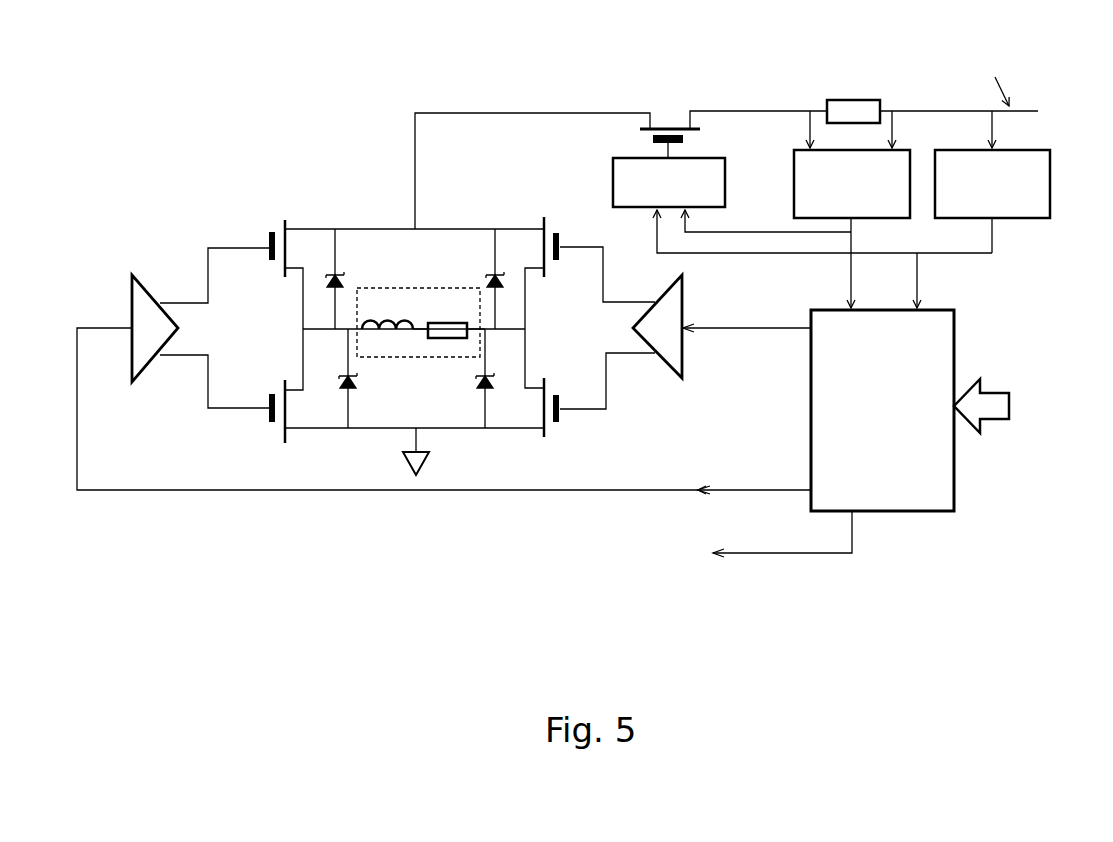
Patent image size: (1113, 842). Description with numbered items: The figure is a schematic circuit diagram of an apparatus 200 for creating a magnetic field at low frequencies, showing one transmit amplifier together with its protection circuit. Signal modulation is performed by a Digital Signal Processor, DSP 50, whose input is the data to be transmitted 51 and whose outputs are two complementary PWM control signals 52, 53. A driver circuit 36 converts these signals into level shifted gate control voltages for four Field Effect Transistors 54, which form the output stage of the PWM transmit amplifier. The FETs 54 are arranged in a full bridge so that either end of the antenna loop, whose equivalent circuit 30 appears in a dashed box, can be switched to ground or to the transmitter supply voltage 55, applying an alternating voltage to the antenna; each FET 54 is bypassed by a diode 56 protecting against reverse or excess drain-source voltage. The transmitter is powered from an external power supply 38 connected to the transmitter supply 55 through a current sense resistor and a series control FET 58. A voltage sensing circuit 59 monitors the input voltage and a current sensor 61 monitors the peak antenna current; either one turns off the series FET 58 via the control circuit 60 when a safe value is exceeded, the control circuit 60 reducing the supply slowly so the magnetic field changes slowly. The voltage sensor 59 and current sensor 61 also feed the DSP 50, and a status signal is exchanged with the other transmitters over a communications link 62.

The apparatus 200 is at (215, 90).
The equivalent circuit 30 is at (405, 287).
The driver circuit 36 is at (122, 292).
The external power supply 38 is at (851, 95).
The Digital Signal Processor 50 is at (940, 310).
The data to be transmitted 51 is at (988, 390).
The PWM control signal 52 is at (737, 322).
The PWM control signal 53 is at (728, 485).
The Field Effect Transistor 54 is at (275, 222).
The transmitter supply voltage 55 is at (445, 108).
The diode 56 is at (338, 275).
The series control FET 58 is at (667, 112).
The voltage sensing circuit 59 is at (1055, 200).
The control circuit 60 is at (613, 175).
The current sensor 61 is at (794, 178).
The communications link 62 is at (825, 555).